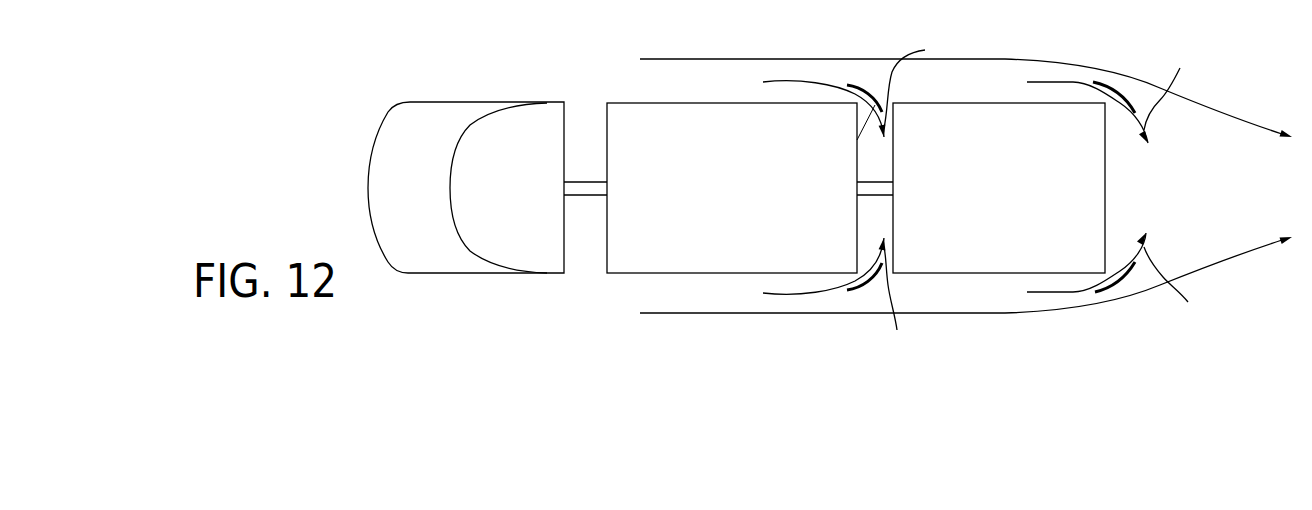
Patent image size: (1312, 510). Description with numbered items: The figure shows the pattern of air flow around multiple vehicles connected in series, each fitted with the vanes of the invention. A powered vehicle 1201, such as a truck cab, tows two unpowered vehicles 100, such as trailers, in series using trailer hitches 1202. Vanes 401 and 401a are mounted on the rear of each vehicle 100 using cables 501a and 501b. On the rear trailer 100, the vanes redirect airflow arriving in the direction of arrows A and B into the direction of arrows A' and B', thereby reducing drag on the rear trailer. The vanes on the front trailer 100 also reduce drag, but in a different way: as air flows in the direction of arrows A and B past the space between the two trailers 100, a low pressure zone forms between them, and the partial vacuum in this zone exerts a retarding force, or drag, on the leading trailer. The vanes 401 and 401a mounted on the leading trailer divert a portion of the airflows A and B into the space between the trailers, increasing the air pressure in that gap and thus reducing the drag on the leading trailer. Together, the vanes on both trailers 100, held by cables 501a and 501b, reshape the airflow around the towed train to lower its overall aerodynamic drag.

The powered vehicle 1201 is at (453, 102).
The trailer hitches 1202 is at (583, 181).
The unpowered vehicle 100 is at (793, 262).
The cable 501a is at (843, 88).
The cable 501b is at (857, 140).
The vane 401a is at (877, 89).
The vane 401 is at (858, 289).
The arrow A is at (966, 91).
The arrow A' is at (1168, 94).
The arrow B is at (966, 280).
The arrow B' is at (1170, 276).